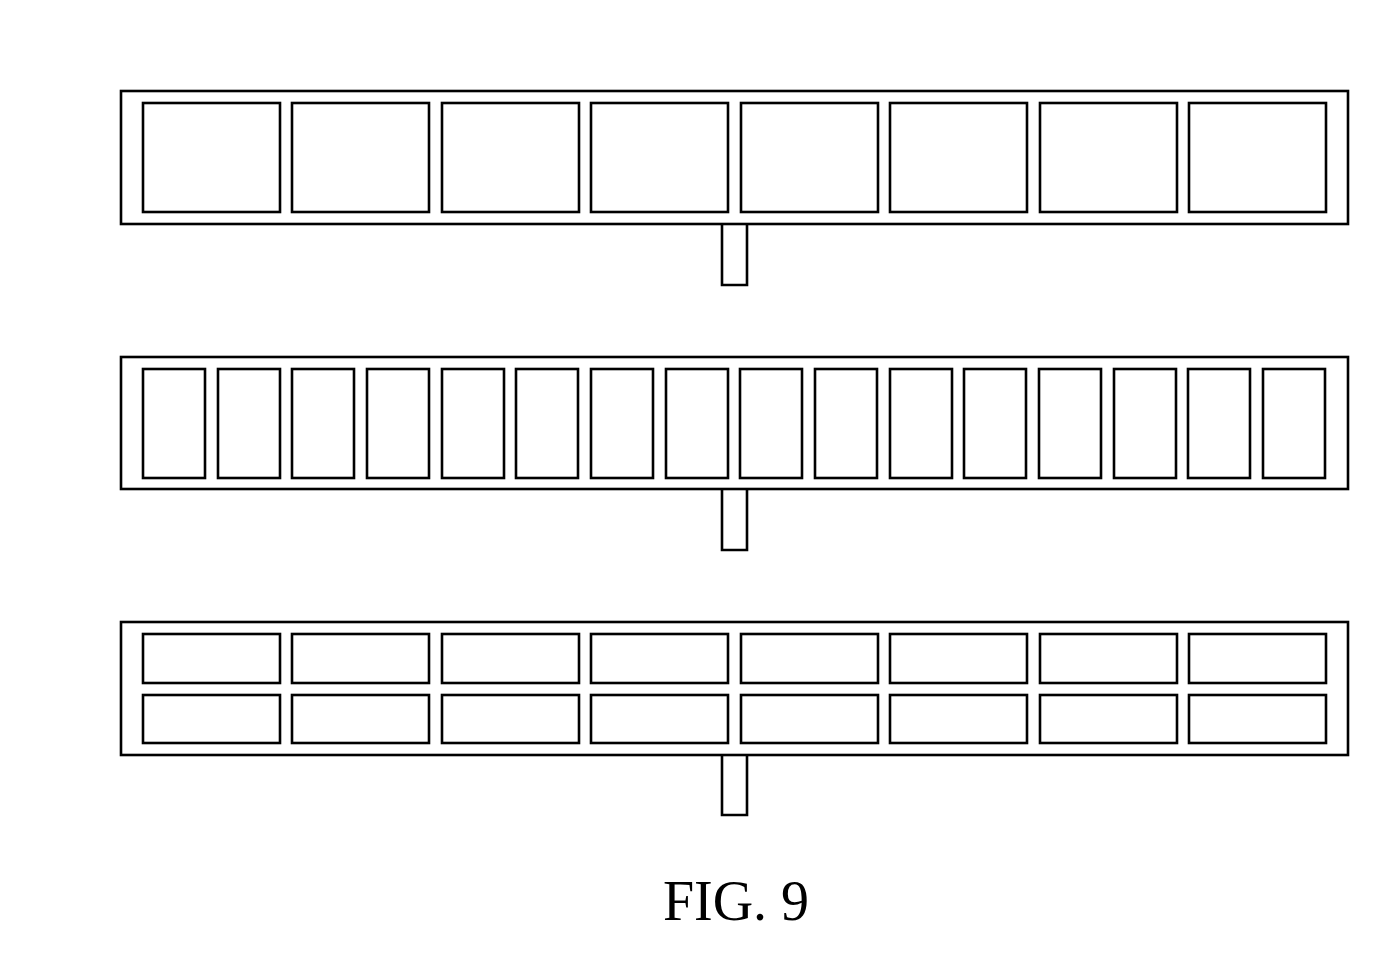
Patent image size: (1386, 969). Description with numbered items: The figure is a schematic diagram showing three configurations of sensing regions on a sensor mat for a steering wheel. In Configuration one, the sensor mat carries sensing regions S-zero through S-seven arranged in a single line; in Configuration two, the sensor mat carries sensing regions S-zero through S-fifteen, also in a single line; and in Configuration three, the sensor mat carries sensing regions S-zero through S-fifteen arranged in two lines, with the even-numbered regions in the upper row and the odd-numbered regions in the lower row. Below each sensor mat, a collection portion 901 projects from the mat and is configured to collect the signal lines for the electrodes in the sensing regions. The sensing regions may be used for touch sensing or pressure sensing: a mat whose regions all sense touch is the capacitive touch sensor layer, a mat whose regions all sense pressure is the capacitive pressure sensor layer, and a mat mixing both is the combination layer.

The collection portion 901 is at (738, 256).